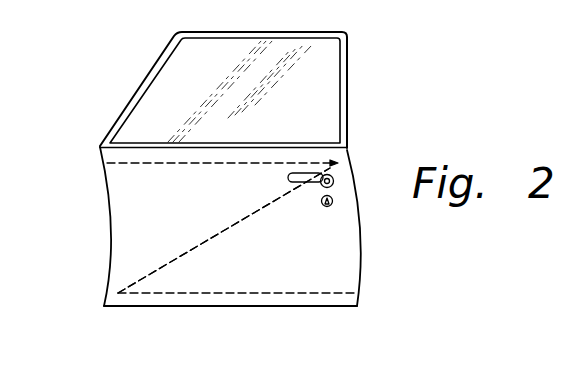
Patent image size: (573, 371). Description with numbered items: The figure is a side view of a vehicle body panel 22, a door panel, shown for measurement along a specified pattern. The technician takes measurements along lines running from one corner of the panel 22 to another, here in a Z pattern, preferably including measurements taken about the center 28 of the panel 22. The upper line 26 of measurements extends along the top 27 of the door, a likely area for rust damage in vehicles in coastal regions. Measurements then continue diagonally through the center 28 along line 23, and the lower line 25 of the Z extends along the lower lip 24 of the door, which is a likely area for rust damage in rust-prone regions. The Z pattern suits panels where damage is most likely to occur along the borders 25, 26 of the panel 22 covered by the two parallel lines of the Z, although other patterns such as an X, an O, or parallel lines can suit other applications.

The body panel 22 is at (360, 237).
The line 23 is at (172, 262).
The lower lip 24 is at (357, 303).
The lower line 25 is at (235, 294).
The upper line 26 is at (140, 163).
The top 27 is at (100, 147).
The center 28 is at (230, 228).